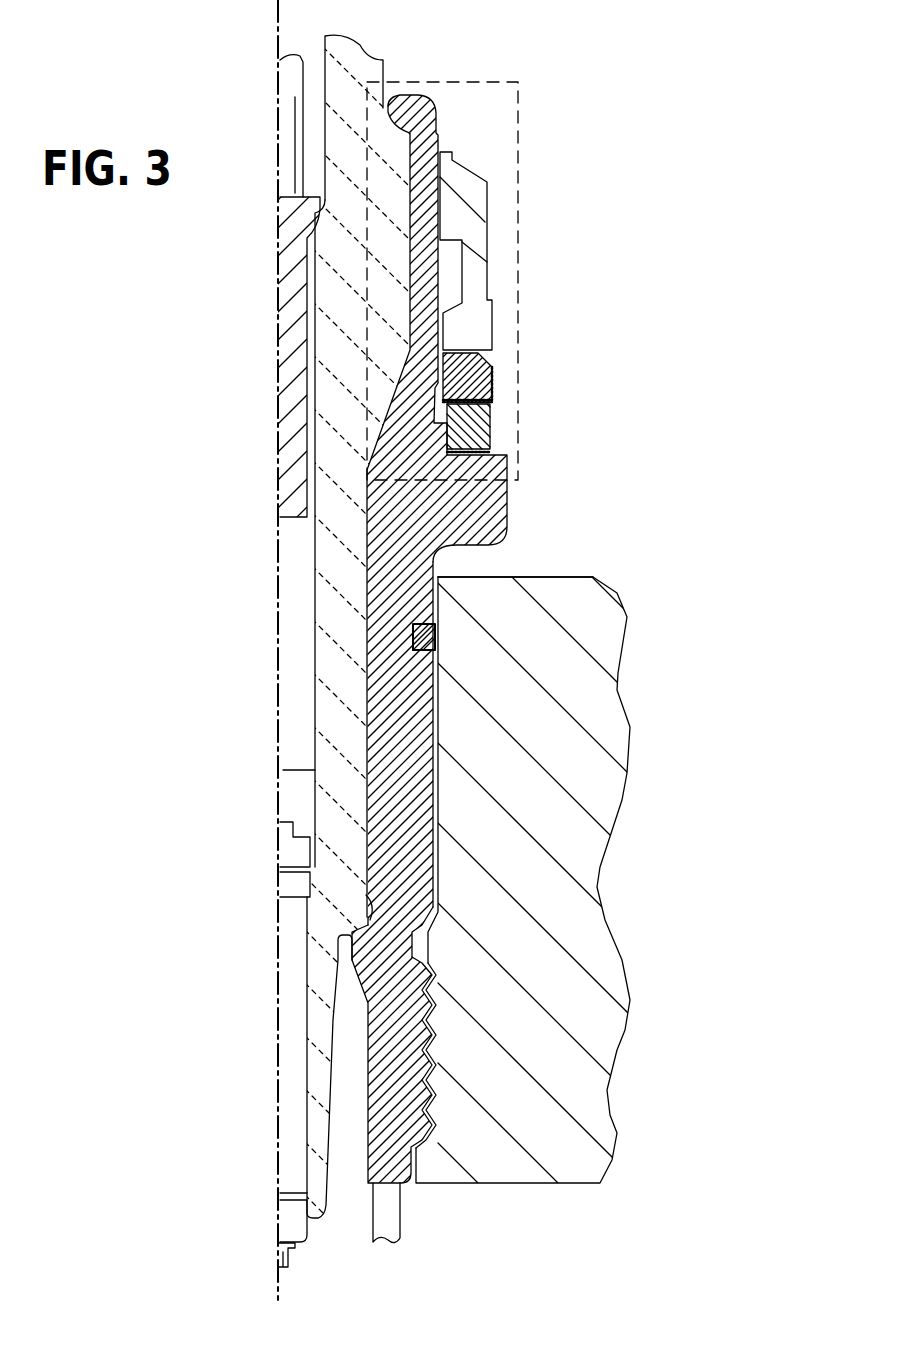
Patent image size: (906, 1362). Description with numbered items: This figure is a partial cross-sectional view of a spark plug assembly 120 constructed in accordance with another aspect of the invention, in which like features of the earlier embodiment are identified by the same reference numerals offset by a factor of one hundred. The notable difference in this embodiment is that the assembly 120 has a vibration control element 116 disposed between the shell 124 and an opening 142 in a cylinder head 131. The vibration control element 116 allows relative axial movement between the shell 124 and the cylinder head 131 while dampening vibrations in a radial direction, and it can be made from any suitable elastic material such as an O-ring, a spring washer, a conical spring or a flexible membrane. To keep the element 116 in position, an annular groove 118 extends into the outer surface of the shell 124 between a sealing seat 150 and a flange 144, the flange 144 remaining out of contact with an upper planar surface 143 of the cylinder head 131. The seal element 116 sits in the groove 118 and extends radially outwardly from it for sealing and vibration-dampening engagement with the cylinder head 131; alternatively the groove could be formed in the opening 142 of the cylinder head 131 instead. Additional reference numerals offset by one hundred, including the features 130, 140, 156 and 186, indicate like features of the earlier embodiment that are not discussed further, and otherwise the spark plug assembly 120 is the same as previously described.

The spark plug assembly 120 is at (565, 120).
The shell 124 is at (448, 272).
The seal assembly 130 is at (525, 323).
The flange 144 is at (515, 517).
The upper planar surface 143 is at (545, 578).
The vibration control element 116 is at (440, 630).
The annular groove 118 is at (437, 646).
The cylinder head 131 is at (560, 755).
The opening 142 is at (437, 822).
The sealing seat 150 is at (436, 910).
The like feature 186 is at (366, 895).
The like feature 156 is at (340, 952).
The like feature 140 is at (643, 963).